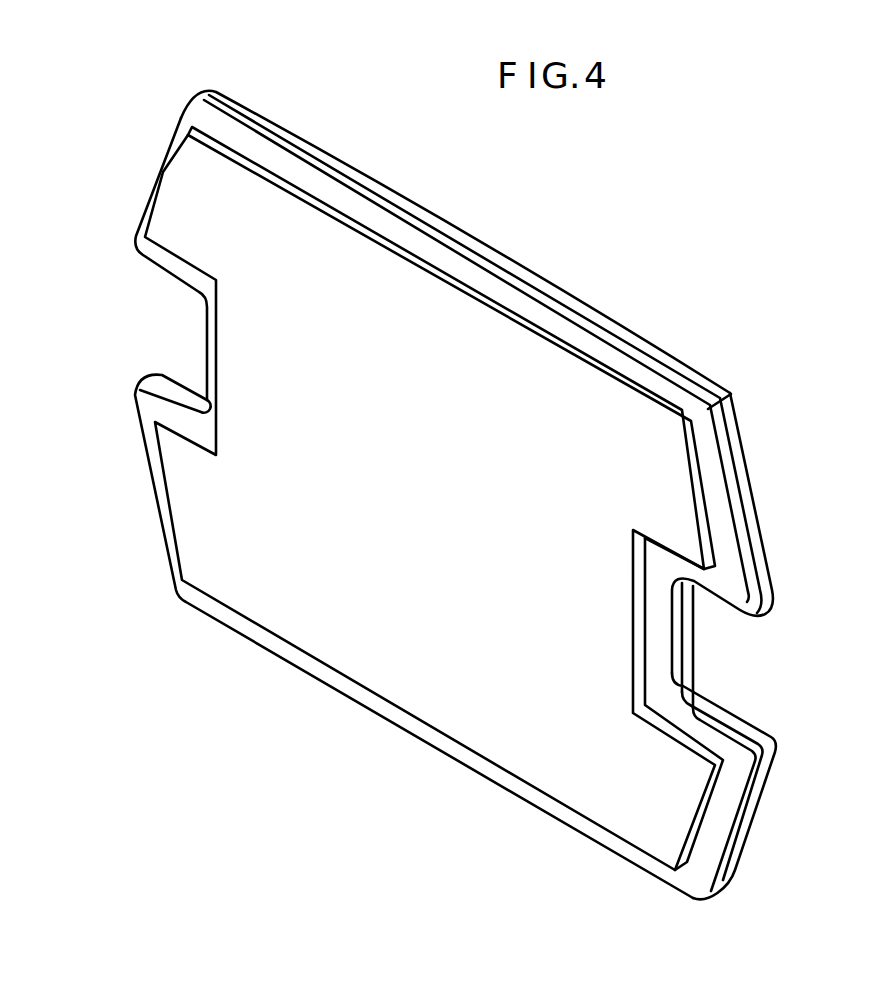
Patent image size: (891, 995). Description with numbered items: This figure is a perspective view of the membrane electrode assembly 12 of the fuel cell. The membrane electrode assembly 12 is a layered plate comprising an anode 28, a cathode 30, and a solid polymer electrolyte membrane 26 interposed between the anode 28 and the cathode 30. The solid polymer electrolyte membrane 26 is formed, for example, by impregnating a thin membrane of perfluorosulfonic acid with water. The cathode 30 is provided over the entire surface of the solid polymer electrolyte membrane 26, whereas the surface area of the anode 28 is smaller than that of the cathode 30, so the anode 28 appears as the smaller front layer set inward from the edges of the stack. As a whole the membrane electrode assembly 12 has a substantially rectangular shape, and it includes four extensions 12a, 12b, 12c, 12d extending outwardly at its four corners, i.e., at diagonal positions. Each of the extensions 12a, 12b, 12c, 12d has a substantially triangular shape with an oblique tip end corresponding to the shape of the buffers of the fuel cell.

The membrane electrode assembly 12 is at (738, 166).
The extension 12a is at (131, 234).
The extension 12b is at (775, 745).
The extension 12c is at (781, 586).
The extension 12d is at (152, 407).
The solid polymer electrolyte membrane 26 is at (183, 115).
The anode 28 is at (190, 172).
The cathode 30 is at (240, 97).